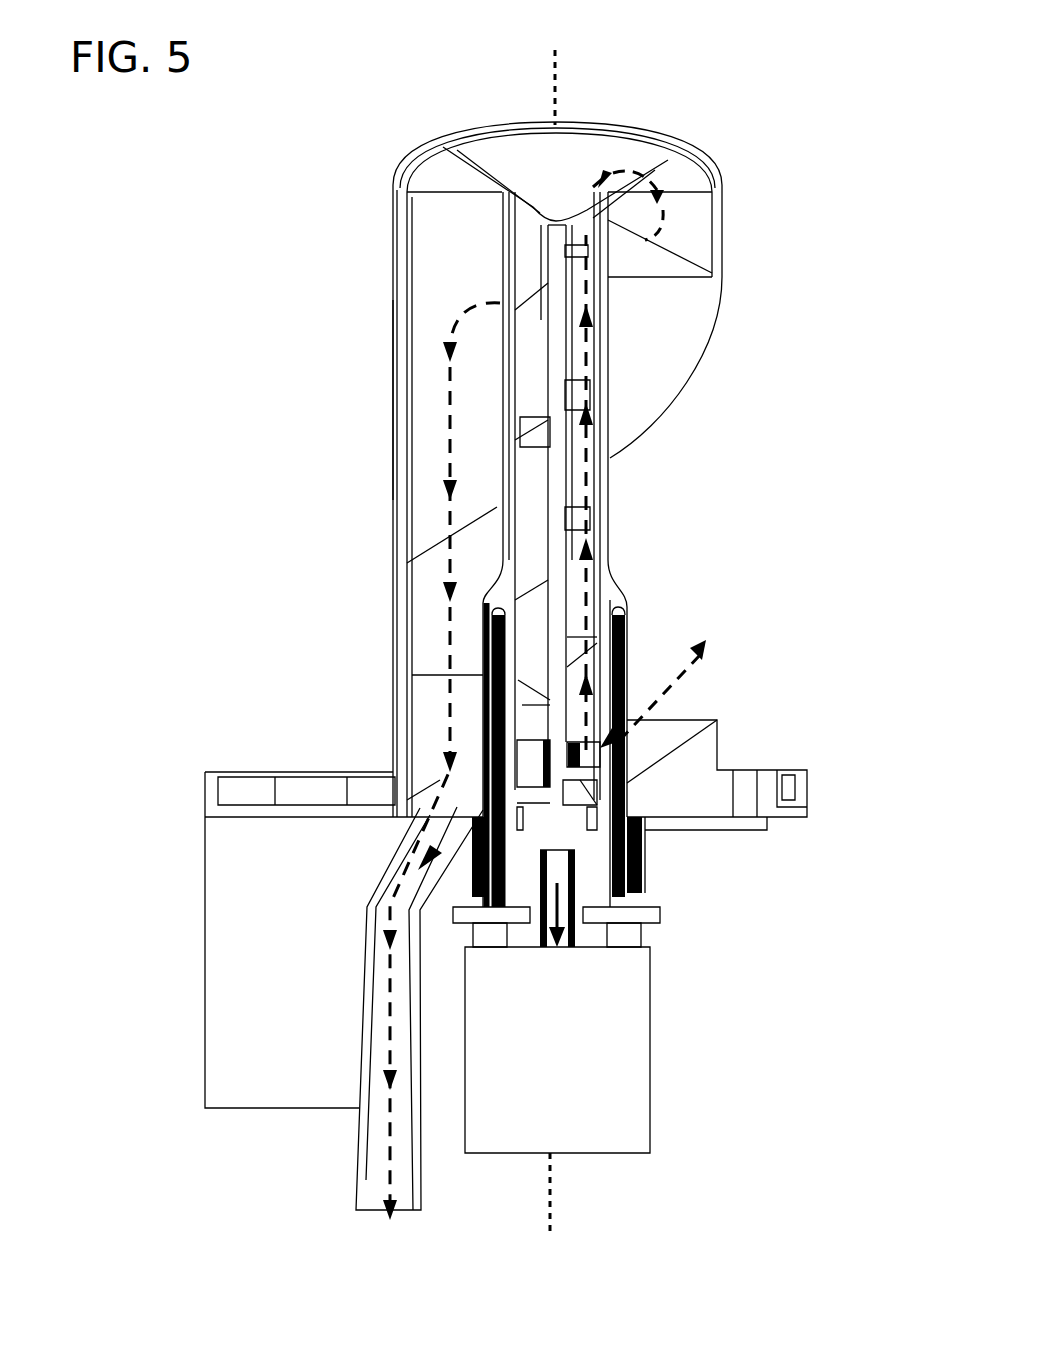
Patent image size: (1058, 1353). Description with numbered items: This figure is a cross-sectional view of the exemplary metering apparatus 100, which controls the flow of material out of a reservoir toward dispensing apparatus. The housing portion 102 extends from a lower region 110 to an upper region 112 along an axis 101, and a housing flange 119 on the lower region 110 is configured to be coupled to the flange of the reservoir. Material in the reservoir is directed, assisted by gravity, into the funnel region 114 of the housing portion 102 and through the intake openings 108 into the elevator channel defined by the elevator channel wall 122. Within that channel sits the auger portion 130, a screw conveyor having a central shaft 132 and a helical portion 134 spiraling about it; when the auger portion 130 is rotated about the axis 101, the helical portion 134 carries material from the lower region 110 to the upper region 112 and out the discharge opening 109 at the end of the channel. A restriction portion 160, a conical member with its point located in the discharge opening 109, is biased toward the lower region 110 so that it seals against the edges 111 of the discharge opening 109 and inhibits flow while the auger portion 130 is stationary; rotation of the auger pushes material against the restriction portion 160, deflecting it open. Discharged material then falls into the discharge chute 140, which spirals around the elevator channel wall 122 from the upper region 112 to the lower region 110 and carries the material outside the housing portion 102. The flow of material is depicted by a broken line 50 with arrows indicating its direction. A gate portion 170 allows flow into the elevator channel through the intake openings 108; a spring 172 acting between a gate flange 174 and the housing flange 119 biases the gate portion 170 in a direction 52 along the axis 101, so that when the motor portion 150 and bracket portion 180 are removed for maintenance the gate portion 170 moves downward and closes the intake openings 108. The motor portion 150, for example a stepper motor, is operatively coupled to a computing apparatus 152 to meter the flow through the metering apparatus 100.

The broken line 50 is at (588, 592).
The direction 52 is at (547, 917).
The metering apparatus 100 is at (138, 222).
The axis 101 is at (555, 1193).
The housing portion 102 is at (400, 448).
The intake openings 108 is at (575, 753).
The discharge opening 109 is at (528, 208).
The lower region 110 is at (395, 735).
The edges 111 is at (535, 215).
The upper region 112 is at (393, 187).
The funnel region 114 is at (667, 740).
The housing flange 119 is at (282, 810).
The elevator channel wall 122 is at (510, 290).
The auger portion 130 is at (560, 400).
The central shaft 132 is at (560, 440).
The helical portion 134 is at (592, 513).
The discharge chute 140 is at (673, 233).
The motor portion 150 is at (608, 1090).
The computing apparatus 152 is at (250, 1022).
The restriction portion 160 is at (623, 178).
The gate portion 170 is at (618, 660).
The spring 172 is at (635, 882).
The gate flange 174 is at (633, 903).
The bracket portion 180 is at (657, 917).